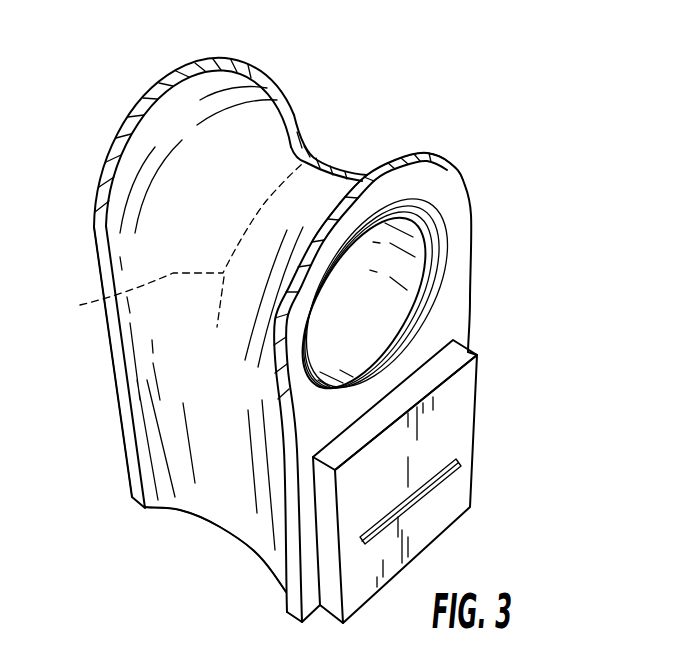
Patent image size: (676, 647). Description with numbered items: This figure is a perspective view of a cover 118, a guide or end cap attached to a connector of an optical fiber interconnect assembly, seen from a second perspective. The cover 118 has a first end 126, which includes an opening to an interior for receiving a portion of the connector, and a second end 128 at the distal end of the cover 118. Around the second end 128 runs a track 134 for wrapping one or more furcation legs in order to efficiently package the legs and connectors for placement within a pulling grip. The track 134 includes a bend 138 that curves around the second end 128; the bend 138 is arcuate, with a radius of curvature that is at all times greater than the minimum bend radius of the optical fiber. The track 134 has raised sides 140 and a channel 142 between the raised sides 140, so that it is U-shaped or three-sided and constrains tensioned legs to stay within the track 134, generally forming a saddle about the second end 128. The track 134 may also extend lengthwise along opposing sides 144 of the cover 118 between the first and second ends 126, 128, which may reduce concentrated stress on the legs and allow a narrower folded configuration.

The cover 118 is at (556, 144).
The first end 126 is at (169, 539).
The second end 128 is at (345, 108).
The track 134 is at (183, 193).
The bend 138 is at (118, 299).
The raised sides 140 is at (188, 72).
The channel 142 is at (287, 157).
The opposing sides 144 is at (125, 450).